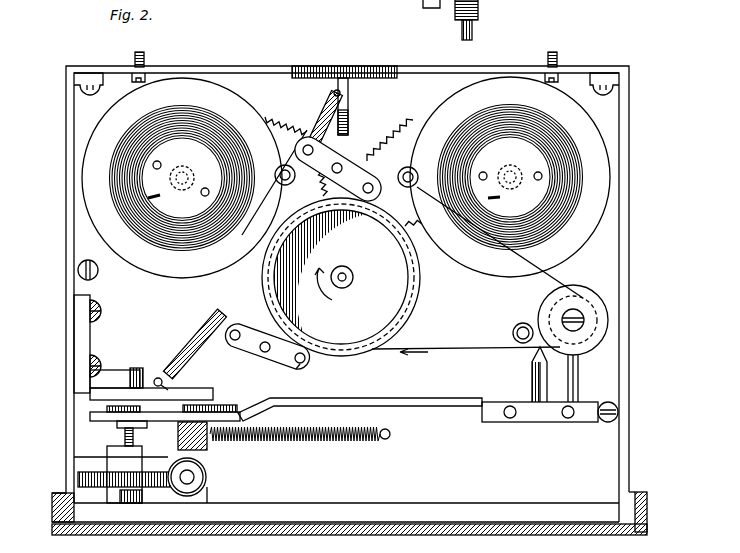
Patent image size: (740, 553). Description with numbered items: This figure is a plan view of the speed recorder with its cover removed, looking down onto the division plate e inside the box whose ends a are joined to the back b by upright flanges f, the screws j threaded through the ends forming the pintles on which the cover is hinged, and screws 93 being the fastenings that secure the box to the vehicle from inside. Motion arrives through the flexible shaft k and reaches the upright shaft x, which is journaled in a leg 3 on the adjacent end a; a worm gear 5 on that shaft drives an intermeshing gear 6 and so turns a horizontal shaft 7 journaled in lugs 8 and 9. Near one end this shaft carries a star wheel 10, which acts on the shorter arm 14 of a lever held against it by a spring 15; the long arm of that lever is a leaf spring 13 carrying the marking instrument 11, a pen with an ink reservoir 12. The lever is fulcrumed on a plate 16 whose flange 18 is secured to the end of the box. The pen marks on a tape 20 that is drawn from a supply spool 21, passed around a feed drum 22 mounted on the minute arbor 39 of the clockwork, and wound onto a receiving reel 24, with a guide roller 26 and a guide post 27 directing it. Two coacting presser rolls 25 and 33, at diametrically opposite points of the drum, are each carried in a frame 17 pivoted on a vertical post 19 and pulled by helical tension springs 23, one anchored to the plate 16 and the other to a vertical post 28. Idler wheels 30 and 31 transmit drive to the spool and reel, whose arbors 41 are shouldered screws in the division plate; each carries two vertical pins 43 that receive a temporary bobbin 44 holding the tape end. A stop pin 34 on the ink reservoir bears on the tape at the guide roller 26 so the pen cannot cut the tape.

The leg 3 is at (170, 500).
The worm gear 5 is at (206, 480).
The intermeshing gear 6 is at (78, 478).
The horizontal shaft 7 is at (134, 438).
The lug 8 is at (126, 503).
The lug 9 is at (110, 378).
The star wheel 10 is at (117, 424).
The marking instrument 11 is at (530, 380).
The ink reservoir 12 is at (548, 422).
The leaf spring 13 is at (448, 406).
The shorter arm 14 is at (90, 414).
The spring 15 is at (304, 436).
The plate 16 is at (210, 392).
The frame 17 is at (312, 160).
The flange 18 is at (92, 338).
The vertical post 19 is at (340, 164).
The tape 20 is at (244, 236).
The supply spool 21 is at (574, 118).
The feed drum 22 is at (396, 296).
The helical tension spring 23 is at (322, 115).
The receiving reel 24 is at (232, 105).
The presser roll 25 is at (408, 168).
The guide roller 26 is at (580, 294).
The guide post 27 is at (520, 322).
The vertical post 28 is at (334, 94).
The idler wheel 30 is at (420, 120).
The idler wheel 31 is at (289, 148).
The presser roll 33 is at (310, 362).
The stop pin 34 is at (585, 378).
The minute arbor 39 is at (348, 274).
The arbor 41 is at (178, 192).
The vertical pin 43 is at (161, 166).
The temporary bobbin 44 is at (150, 182).
The screw 93 is at (145, 58).
The end a is at (64, 260).
The back b is at (262, 73).
The division plate e is at (349, 497).
The upright flange f is at (608, 58).
The screw j is at (50, 500).
The flexible shaft k is at (474, 30).
The upright shaft x is at (194, 473).